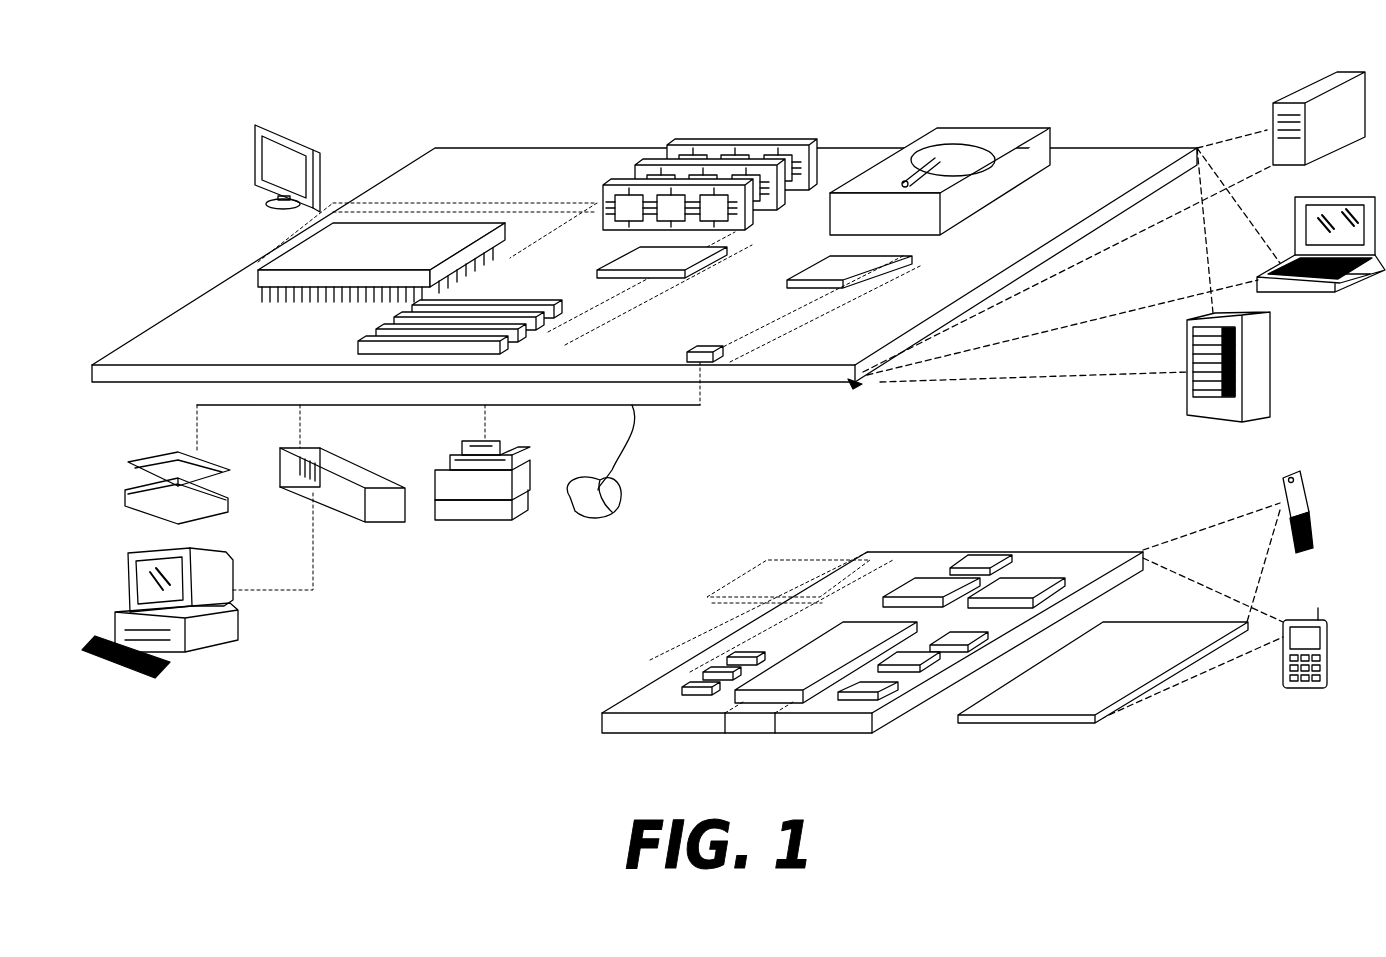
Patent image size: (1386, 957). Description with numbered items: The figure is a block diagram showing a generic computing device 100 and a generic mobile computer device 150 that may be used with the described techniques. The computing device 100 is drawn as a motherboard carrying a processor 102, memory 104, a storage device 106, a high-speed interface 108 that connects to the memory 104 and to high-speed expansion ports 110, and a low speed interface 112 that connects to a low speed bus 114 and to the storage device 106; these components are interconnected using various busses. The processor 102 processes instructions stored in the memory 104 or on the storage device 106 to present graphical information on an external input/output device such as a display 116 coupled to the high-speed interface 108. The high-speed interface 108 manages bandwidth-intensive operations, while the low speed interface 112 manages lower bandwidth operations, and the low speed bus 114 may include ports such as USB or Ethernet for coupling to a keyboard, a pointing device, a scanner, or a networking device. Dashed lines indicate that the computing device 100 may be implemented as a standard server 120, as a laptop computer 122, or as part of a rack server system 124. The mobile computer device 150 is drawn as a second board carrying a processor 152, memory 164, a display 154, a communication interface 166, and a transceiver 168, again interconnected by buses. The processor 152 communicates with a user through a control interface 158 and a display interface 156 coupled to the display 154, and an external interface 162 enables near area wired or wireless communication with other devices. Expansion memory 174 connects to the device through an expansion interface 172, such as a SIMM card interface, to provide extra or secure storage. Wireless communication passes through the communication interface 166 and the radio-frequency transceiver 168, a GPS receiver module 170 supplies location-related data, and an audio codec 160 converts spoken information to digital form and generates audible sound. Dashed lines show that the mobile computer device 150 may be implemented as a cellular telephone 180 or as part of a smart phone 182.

The computing device 100 is at (388, 100).
The processor 102 is at (285, 258).
The memory 104 is at (746, 147).
The storage device 106 is at (986, 130).
The high-speed interface 108 is at (677, 262).
The high-speed expansion ports 110 is at (386, 328).
The low speed interface 112 is at (823, 262).
The low speed bus 114 is at (706, 350).
The display 116 is at (262, 120).
The standard server 120 is at (1296, 100).
The laptop computer 122 is at (1350, 196).
The rack server system 124 is at (1273, 368).
The mobile computer device 150 is at (548, 742).
The processor 152 is at (795, 662).
The display 154 is at (1143, 624).
The display interface 156 is at (878, 694).
The control interface 158 is at (920, 666).
The audio codec 160 is at (958, 637).
The external interface 162 is at (753, 733).
The memory 164 is at (710, 672).
The communication interface 166 is at (930, 580).
The transceiver 168 is at (1016, 580).
The GPS receiver module 170 is at (985, 560).
The expansion interface 172 is at (852, 560).
The expansion memory 174 is at (768, 560).
The cellular telephone 180 is at (1290, 474).
The smart phone 182 is at (1302, 620).